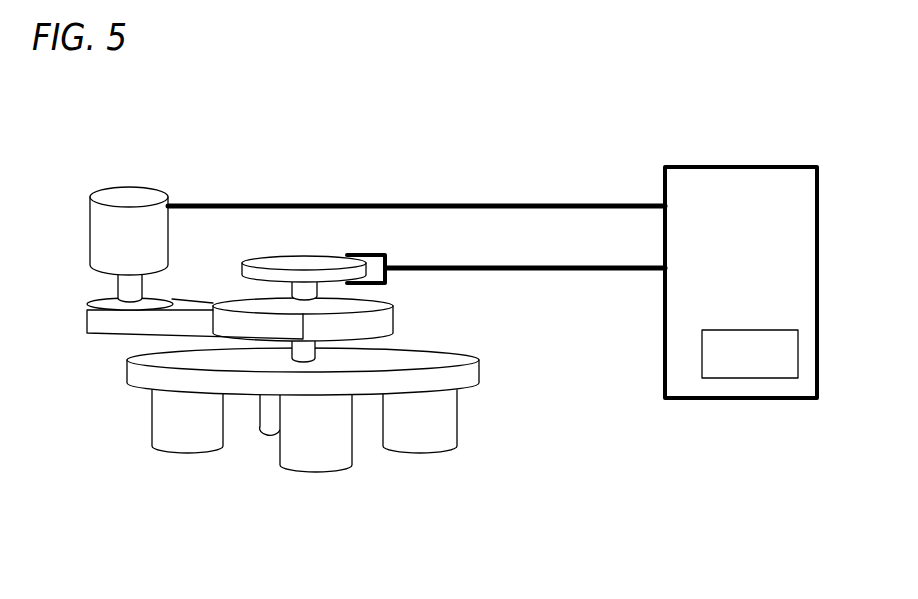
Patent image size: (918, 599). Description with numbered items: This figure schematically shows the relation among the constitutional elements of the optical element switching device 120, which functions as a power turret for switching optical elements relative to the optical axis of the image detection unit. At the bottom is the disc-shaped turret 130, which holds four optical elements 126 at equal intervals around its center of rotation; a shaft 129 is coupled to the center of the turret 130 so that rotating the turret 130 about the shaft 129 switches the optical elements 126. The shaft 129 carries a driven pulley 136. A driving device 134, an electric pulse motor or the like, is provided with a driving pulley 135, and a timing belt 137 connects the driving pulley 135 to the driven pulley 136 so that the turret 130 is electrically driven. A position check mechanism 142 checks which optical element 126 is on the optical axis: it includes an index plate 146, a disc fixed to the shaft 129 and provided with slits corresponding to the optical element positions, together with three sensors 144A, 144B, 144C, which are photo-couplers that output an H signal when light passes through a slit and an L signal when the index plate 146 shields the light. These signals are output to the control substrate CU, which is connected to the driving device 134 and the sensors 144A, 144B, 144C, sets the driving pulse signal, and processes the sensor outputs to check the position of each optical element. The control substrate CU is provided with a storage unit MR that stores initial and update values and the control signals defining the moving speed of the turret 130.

The optical element switching device 120 is at (339, 189).
The optical elements 126 is at (413, 438).
The shaft 129 is at (307, 353).
The turret 130 is at (448, 363).
The driving device 134 is at (135, 197).
The driving pulley 135 is at (152, 305).
The driven pulley 136 is at (375, 310).
The timing belt 137 is at (117, 323).
The position check mechanism 142 is at (393, 215).
The sensor 144A is at (506, 251).
The sensor 144B is at (506, 251).
The sensor 144C is at (379, 253).
The index plate 146 is at (262, 256).
The control substrate CU is at (695, 182).
The storage unit MR is at (722, 332).